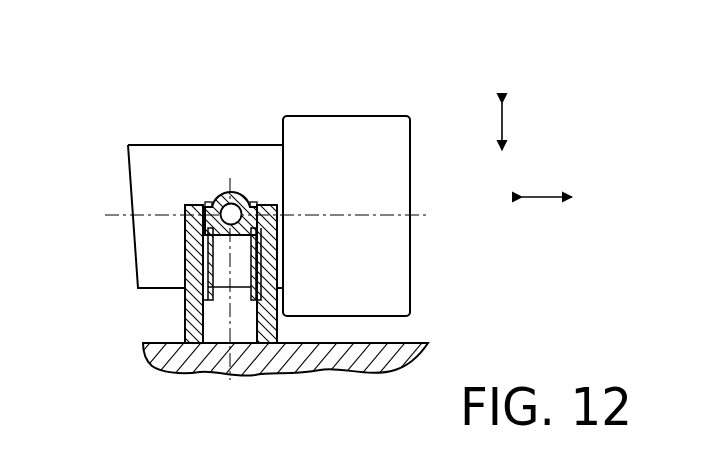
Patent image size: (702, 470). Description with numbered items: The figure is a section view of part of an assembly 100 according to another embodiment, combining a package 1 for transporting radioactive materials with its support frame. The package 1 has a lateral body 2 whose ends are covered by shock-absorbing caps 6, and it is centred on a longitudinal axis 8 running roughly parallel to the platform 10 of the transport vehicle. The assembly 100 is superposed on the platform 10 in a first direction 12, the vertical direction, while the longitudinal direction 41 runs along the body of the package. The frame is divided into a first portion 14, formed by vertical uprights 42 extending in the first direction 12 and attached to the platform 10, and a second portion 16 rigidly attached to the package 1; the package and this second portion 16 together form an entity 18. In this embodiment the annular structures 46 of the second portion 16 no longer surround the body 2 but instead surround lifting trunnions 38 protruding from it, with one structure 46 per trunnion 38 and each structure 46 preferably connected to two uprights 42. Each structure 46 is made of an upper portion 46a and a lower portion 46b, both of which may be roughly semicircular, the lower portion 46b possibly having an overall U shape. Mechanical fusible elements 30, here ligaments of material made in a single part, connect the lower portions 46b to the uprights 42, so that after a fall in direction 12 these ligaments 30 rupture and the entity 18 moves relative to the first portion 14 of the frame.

The assembly 100 is at (201, 89).
The package 1 is at (166, 140).
The lateral body 2 is at (143, 152).
The shock-absorbing cap 6 is at (386, 132).
The longitudinal axis 8 is at (430, 218).
The platform 10 is at (386, 335).
The first direction 12 is at (503, 125).
The first portion 14 is at (172, 325).
The second portion 16 is at (217, 246).
The entity 18 is at (331, 111).
The fusible element 30 is at (210, 237).
The lifting trunnion 38 is at (236, 212).
The longitudinal direction 41 is at (547, 198).
The upright 42 is at (185, 293).
The annular structure 46 is at (240, 191).
The upper portion 46a is at (210, 202).
The lower portion 46b is at (237, 236).